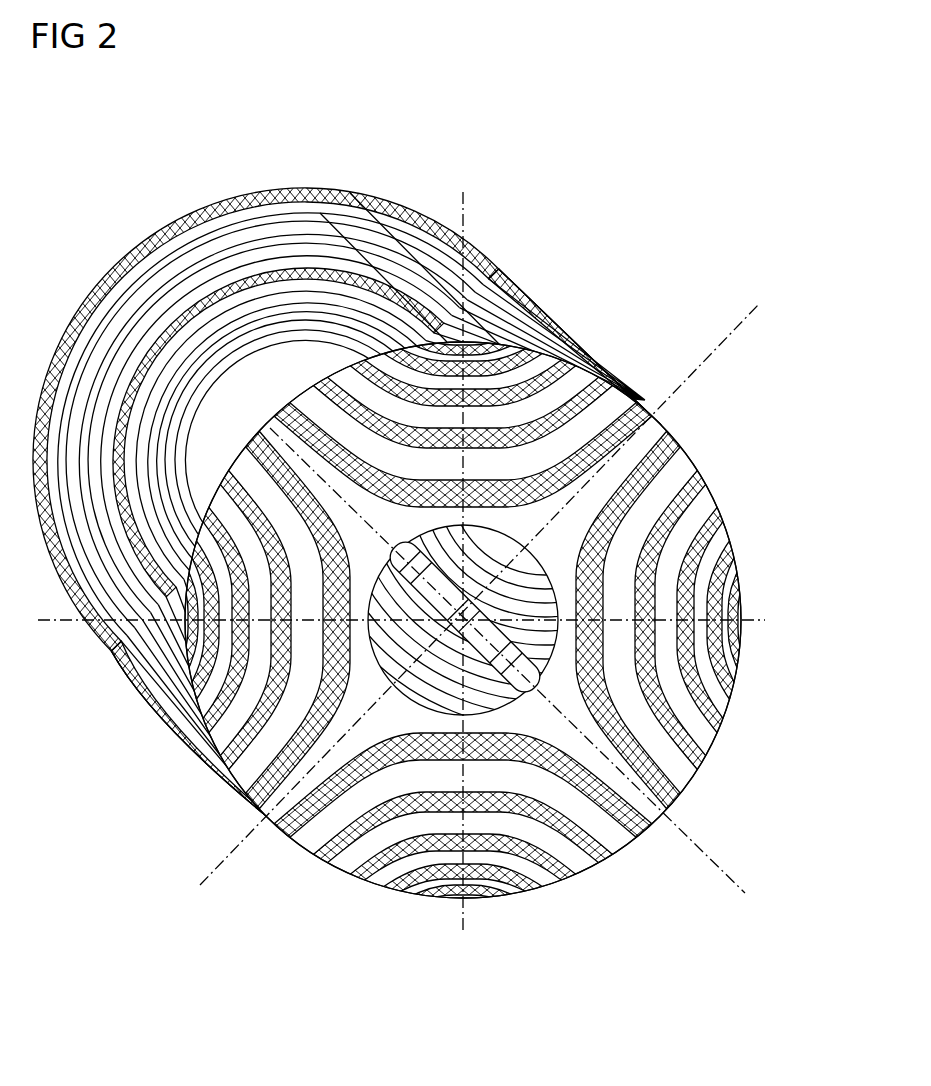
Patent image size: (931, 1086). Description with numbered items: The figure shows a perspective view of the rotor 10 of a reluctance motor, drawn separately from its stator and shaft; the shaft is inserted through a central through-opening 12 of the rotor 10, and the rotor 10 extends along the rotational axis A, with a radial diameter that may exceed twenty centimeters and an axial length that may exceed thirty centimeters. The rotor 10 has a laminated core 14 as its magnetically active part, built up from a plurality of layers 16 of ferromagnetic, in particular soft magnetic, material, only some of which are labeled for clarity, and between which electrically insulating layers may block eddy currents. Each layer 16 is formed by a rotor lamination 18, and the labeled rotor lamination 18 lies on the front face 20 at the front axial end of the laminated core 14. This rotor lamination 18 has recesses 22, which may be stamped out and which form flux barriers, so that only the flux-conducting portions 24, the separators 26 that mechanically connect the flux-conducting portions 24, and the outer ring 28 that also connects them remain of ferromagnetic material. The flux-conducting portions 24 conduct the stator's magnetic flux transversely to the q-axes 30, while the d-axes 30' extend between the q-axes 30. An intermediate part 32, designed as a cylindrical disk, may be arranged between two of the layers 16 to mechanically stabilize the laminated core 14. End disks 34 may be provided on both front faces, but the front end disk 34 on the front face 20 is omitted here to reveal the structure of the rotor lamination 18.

The rotor 10 is at (663, 186).
The through-opening 12 is at (496, 548).
The laminated core 14 is at (152, 240).
The layers 16 is at (216, 262).
The rotor lamination 18 is at (703, 488).
The front face 20 is at (638, 412).
The recesses 22 is at (642, 848).
The flux-conducting portions 24 is at (300, 832).
The separators 26 is at (632, 640).
The outer ring 28 is at (736, 498).
The q-axes 30 is at (407, 564).
The d-axes 30' is at (480, 580).
The intermediate part 32 is at (150, 360).
The end disks 34 is at (118, 268).
The rotational axis A is at (742, 882).